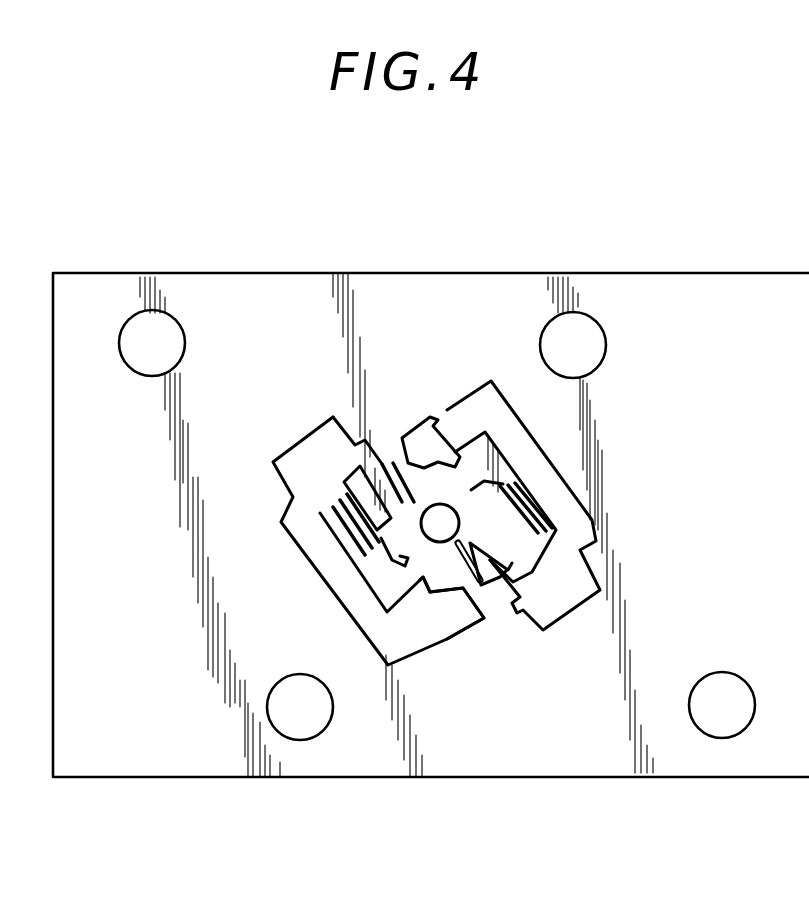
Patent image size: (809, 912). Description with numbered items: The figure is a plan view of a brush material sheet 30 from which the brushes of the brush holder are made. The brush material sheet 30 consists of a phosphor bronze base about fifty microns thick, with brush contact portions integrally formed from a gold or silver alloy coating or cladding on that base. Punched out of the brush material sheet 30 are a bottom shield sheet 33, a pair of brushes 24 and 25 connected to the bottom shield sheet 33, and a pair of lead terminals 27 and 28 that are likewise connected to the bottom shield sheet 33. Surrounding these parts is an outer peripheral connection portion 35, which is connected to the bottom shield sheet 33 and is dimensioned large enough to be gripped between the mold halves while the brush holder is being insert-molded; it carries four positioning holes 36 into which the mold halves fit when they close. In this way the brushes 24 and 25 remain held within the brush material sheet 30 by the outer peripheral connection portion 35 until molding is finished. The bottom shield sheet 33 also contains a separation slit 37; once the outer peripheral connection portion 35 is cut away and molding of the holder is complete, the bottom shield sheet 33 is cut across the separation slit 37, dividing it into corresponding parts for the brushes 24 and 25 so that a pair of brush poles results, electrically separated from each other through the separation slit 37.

The brush 24 is at (342, 548).
The brush 25 is at (548, 520).
The lead terminal 27 is at (347, 473).
The lead terminal 28 is at (515, 568).
The brush material sheet 30 is at (714, 271).
The bottom shield sheet 33 is at (440, 490).
The outer peripheral connection portion 35 is at (755, 498).
The positioning holes 36 is at (186, 342).
The separation slit 37 is at (455, 563).